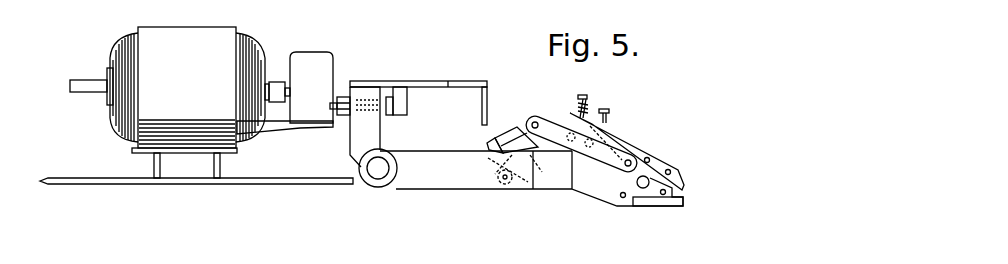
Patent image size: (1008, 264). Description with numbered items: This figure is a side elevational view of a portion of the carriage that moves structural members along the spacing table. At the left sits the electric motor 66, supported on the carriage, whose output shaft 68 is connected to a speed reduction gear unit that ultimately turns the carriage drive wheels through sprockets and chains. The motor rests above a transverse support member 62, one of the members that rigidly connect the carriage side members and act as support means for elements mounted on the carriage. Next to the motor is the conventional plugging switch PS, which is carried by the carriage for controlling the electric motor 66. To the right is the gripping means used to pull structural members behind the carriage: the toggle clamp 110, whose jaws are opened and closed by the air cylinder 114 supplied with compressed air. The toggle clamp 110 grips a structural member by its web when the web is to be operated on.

The electric motor 66 is at (150, 47).
The output shaft 68 is at (84, 89).
The transverse support member 62 is at (162, 155).
The plugging switch PS is at (306, 60).
The air cylinder 114 is at (503, 138).
The toggle clamp 110 is at (606, 192).